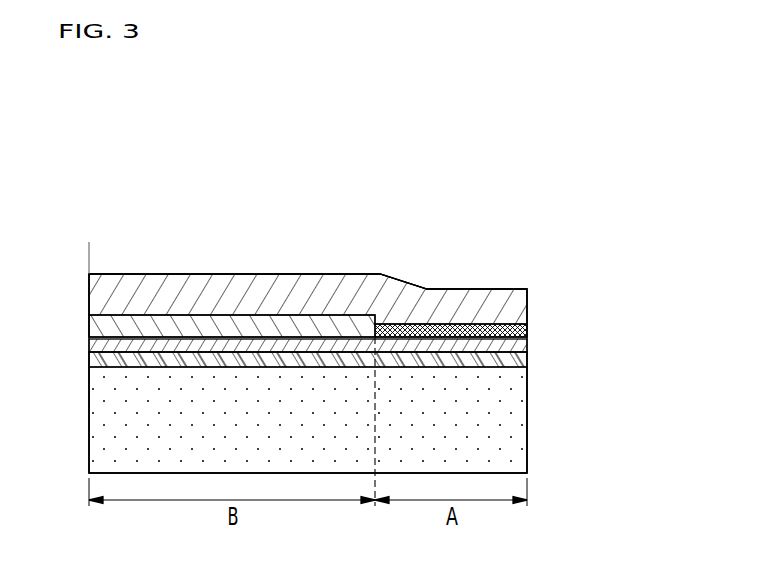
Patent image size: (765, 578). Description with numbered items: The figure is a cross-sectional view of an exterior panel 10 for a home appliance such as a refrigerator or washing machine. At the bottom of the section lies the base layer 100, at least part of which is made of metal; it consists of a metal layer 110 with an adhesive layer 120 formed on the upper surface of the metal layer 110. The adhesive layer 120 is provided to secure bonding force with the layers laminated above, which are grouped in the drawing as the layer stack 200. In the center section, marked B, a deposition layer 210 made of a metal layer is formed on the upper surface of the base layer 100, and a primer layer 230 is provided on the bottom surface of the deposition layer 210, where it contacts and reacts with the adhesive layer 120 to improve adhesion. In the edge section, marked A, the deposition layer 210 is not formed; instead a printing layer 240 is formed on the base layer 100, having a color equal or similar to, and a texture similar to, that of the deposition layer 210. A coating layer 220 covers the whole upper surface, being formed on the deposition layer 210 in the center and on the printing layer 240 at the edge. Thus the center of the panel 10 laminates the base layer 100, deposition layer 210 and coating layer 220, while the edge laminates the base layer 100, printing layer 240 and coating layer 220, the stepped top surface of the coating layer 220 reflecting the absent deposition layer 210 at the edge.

The exterior panel 10 is at (473, 232).
The base layer 100 is at (590, 348).
The metal layer 110 is at (522, 413).
The adhesive layer 120 is at (525, 358).
The laminated layers on the base layer 200 is at (420, 228).
The deposition layer 210 is at (330, 322).
The coating layer 220 is at (367, 282).
The primer layer 230 is at (287, 342).
The printing layer 240 is at (413, 333).